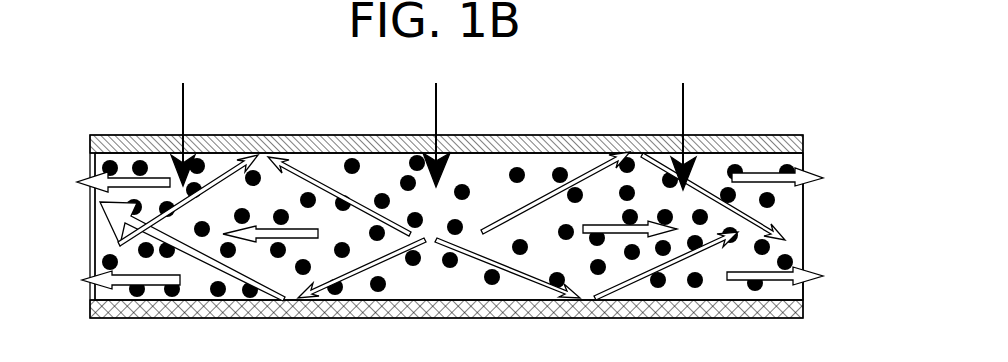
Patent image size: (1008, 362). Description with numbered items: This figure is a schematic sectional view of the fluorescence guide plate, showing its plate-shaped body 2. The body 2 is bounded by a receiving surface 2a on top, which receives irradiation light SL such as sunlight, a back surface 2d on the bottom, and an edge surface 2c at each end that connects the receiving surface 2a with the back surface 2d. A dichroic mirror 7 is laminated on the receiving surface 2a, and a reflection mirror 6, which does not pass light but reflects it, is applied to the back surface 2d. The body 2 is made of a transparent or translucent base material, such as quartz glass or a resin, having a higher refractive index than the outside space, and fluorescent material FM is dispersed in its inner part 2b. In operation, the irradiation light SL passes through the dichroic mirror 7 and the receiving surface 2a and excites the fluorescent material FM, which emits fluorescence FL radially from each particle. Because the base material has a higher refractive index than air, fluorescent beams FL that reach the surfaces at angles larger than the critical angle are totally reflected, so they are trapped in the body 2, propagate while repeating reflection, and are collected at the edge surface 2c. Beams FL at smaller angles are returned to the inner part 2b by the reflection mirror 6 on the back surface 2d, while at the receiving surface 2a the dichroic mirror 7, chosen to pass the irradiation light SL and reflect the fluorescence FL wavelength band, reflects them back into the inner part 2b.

The body 2 is at (80, 158).
The receiving surface 2a is at (543, 137).
The inner part 2b is at (447, 296).
The edge surface 2c is at (93, 227).
The back surface 2d is at (480, 299).
The reflection mirror 6 is at (90, 320).
The dichroic mirror 7 is at (805, 138).
The fluorescent material FM is at (510, 177).
The fluorescence FL is at (217, 178).
The irradiation light SL is at (434, 120).